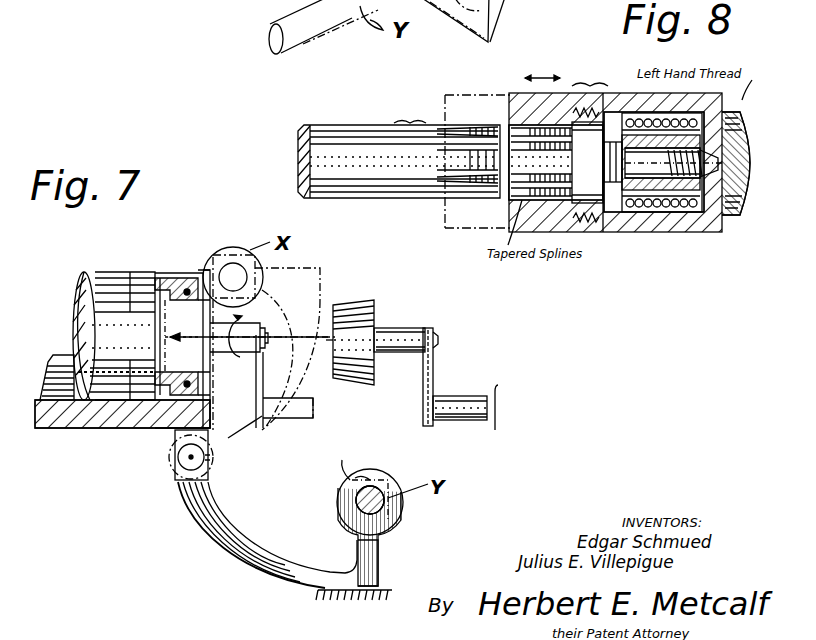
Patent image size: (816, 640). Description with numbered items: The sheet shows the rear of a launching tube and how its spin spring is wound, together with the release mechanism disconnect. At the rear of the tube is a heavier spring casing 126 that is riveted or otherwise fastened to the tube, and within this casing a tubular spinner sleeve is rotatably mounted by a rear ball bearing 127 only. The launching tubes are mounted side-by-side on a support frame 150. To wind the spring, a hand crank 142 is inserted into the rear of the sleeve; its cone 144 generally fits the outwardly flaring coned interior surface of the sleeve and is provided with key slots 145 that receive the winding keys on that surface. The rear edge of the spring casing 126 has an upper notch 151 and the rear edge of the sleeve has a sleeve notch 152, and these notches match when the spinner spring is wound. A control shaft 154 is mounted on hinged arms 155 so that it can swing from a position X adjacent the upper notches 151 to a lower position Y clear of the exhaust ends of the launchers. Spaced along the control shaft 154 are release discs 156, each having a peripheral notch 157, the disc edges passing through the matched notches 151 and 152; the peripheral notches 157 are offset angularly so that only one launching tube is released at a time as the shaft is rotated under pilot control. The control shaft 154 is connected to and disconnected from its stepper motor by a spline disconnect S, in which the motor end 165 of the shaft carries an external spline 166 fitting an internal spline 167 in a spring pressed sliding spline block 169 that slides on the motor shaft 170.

In FIG. 7, the spring casing 126 is at (112, 292).
In FIG. 7, the rear ball bearing 127 is at (160, 432).
In FIG. 7, the hand crank 142 is at (406, 330).
In FIG. 7, the cone 144 is at (380, 318).
In FIG. 7, the key slots 145 is at (360, 310).
In FIG. 7, the support frame 150 is at (100, 430).
In FIG. 7, the upper notch 151 is at (203, 272).
In FIG. 7, the sleeve notch 152 is at (236, 262).
In FIG. 8, the control shaft 154 is at (350, 142).
In FIG. 7, the control shaft 154 is at (384, 520).
In FIG. 7, the hinged arms 155 is at (230, 520).
In FIG. 7, the release discs 156 is at (428, 462).
In FIG. 7, the peripheral notch 157 is at (350, 482).
In FIG. 8, the motor end 165 is at (425, 115).
In FIG. 8, the external spline 166 is at (488, 135).
In FIG. 8, the internal spline 167 is at (556, 92).
In FIG. 8, the sliding spline block 169 is at (514, 92).
In FIG. 8, the motor shaft 170 is at (730, 218).
In FIG. 8, the spline disconnect S is at (590, 72).